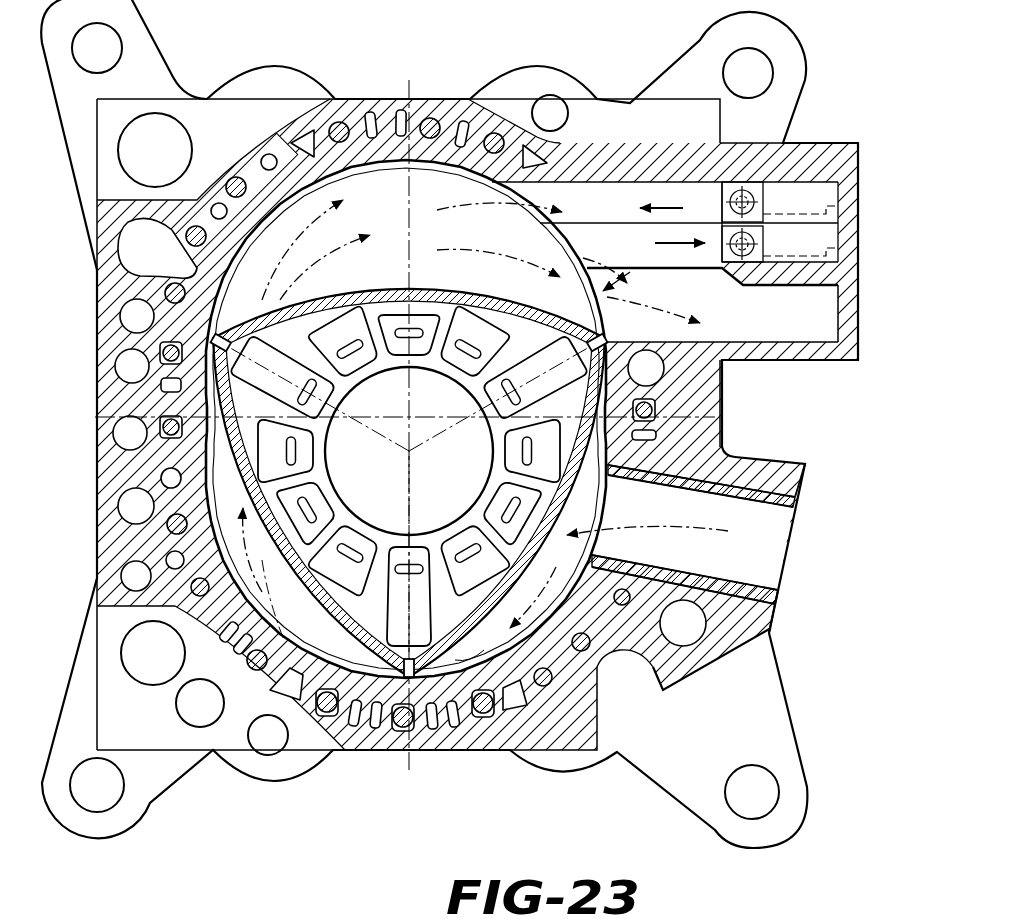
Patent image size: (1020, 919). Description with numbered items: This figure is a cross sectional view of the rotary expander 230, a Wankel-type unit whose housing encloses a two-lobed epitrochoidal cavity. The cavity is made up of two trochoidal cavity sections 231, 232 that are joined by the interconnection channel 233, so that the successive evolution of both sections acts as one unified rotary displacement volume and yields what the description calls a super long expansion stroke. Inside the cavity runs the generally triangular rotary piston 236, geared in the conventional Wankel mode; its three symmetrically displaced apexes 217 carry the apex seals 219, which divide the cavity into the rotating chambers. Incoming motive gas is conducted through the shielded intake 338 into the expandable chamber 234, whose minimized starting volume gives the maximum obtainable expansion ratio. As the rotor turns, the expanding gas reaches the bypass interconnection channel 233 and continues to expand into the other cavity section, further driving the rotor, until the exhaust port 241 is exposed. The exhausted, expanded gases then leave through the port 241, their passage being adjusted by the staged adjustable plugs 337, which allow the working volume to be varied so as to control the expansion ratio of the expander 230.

The rotary expander 230 is at (457, 88).
The cavity section 232 is at (367, 185).
The interconnection channel 233 is at (270, 410).
The apexes 217 is at (270, 307).
The apex seals 219 is at (219, 312).
The cavity section 231 is at (284, 640).
The expandable chamber 234 is at (483, 645).
The rotary piston 236 is at (373, 660).
The staged adjustable plugs 337 is at (692, 228).
The exhaust port 241 is at (806, 327).
The shielded intake 338 is at (770, 550).